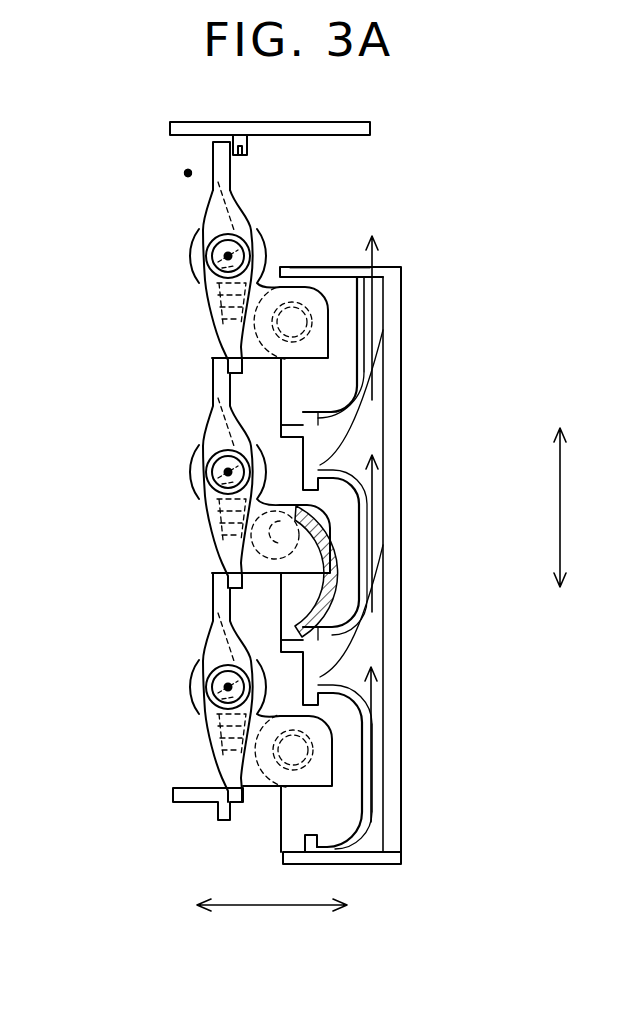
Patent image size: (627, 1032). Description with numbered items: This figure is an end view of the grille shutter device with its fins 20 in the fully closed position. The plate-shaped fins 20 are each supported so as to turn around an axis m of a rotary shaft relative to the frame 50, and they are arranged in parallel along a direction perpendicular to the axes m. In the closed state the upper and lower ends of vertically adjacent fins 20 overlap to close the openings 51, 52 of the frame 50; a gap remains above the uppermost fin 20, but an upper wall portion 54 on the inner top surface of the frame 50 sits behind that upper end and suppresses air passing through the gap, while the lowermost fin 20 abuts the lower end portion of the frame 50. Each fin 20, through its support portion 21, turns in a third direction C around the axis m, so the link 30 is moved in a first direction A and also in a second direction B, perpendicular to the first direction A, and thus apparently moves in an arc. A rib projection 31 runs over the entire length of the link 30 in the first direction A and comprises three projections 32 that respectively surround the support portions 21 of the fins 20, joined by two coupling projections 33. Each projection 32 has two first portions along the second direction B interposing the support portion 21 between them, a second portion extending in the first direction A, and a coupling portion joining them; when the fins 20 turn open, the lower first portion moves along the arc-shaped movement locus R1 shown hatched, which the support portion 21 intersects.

The frame 50 is at (292, 121).
The upper wall portion 54 is at (246, 150).
The opening 51 is at (186, 173).
The opening 52 is at (188, 173).
The fin 20 is at (234, 190).
The axis m is at (226, 257).
The link 30 is at (342, 267).
The rib projection 31 is at (307, 255).
The projection 32 is at (320, 272).
The support portion 21 is at (303, 346).
The movement locus R1 is at (302, 601).
The coupling projection 33 is at (280, 459).
The third direction C is at (375, 256).
The first direction A is at (570, 507).
The second direction B is at (272, 918).